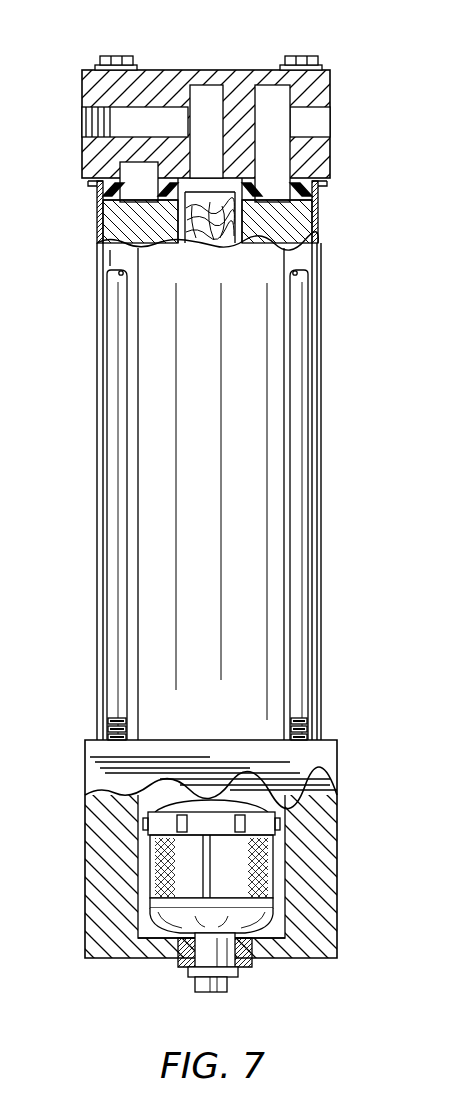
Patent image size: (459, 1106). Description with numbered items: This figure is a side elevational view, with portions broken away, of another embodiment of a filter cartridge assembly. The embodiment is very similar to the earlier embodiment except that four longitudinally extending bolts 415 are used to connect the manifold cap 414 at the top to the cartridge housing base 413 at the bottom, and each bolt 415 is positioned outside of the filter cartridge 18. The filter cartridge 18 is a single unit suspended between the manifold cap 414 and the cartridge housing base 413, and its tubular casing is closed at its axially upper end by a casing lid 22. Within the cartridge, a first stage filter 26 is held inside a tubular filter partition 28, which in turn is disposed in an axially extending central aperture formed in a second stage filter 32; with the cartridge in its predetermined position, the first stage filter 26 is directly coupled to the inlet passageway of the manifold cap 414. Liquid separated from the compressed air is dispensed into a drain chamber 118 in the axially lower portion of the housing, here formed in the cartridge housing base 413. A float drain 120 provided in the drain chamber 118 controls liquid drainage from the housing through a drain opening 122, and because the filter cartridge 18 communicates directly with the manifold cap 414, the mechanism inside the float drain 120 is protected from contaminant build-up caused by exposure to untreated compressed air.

The filter cartridge 18 is at (325, 690).
The casing lid 22 is at (313, 191).
The first stage filter 26 is at (212, 248).
The tubular filter partition 28 is at (102, 230).
The second stage filter 32 is at (303, 232).
The drain chamber 118 is at (155, 806).
The float drain 120 is at (275, 924).
The drain opening 122 is at (197, 985).
The cartridge housing base 413 is at (325, 862).
The manifold cap 414 is at (163, 85).
The bolts 415 is at (112, 56).